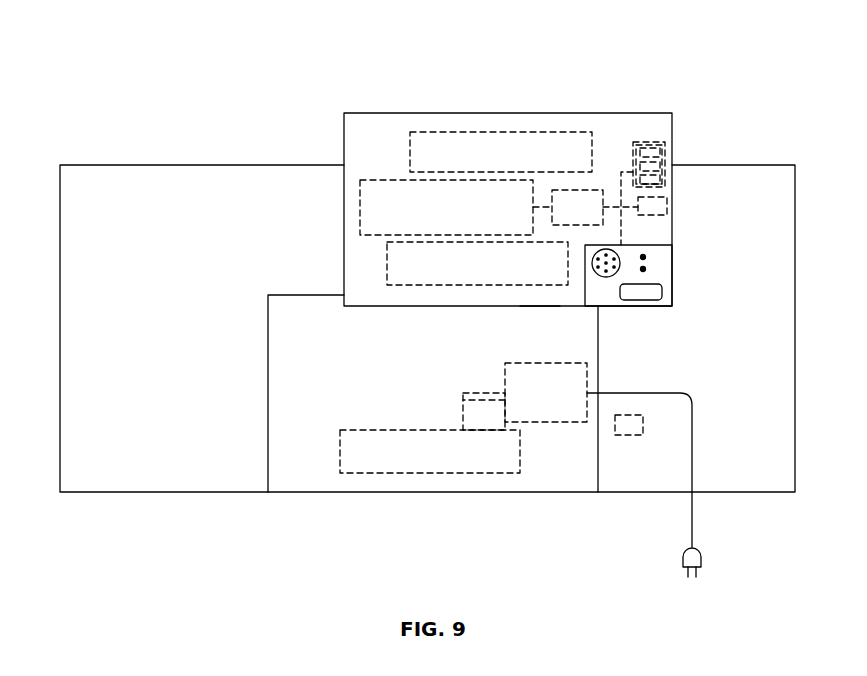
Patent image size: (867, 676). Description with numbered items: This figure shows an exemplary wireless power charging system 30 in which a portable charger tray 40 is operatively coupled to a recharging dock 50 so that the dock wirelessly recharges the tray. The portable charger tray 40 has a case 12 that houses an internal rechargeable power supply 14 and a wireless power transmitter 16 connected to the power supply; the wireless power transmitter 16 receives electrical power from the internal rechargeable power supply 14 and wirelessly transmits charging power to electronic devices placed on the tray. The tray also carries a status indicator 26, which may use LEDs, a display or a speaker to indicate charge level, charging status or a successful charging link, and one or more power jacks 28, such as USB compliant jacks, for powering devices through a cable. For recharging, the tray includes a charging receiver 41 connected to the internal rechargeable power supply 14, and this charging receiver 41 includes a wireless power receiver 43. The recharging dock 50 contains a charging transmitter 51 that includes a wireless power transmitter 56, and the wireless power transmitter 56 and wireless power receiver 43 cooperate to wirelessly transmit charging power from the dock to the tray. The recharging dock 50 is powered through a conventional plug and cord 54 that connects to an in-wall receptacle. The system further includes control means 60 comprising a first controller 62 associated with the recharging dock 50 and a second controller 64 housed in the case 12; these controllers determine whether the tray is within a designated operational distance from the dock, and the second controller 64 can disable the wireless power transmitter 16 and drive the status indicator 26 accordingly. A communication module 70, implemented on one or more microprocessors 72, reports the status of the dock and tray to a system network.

The wireless power charging system 30 is at (118, 31).
The case 12 is at (381, 113).
The internal rechargeable power supply 14 is at (362, 210).
The wireless power transmitter 16 is at (437, 287).
The status indicator 26 is at (662, 268).
The power jacks 28 is at (667, 153).
The portable charger tray 40 is at (537, 306).
The charging receiver 41 is at (501, 118).
The wireless power receiver 43 is at (498, 128).
The recharging dock 50 is at (284, 340).
The charging transmitter 51 is at (404, 436).
The wireless power transmitter 56 is at (380, 430).
The plug and cord 54 is at (703, 560).
The control means 60 is at (613, 307).
The first controller 62 is at (636, 413).
The second controller 64 is at (670, 205).
The communication module 70 is at (573, 272).
The microprocessors 72 is at (580, 190).